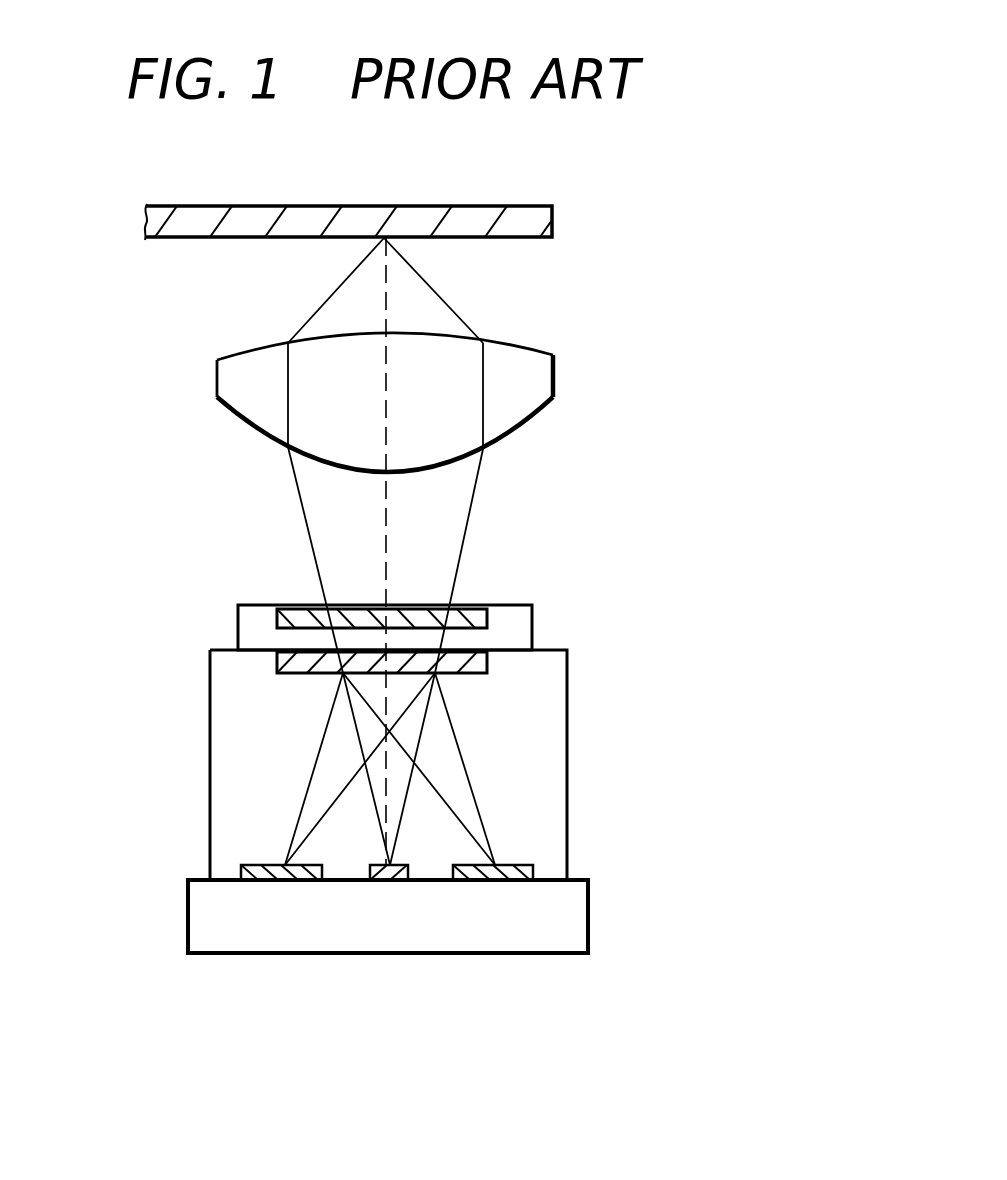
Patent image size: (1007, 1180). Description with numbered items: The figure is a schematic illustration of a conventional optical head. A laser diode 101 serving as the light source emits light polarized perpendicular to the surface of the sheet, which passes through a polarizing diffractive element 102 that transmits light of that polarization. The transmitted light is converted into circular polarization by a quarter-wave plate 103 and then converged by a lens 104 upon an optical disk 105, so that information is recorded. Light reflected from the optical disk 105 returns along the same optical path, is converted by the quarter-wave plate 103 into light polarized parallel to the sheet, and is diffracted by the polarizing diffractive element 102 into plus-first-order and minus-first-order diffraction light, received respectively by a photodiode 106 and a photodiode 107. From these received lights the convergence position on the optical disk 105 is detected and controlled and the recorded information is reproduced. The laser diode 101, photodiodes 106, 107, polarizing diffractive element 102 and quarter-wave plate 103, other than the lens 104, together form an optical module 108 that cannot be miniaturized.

The laser diode 101 is at (383, 881).
The polarizing diffractive element 102 is at (487, 667).
The quarter-wave plate 103 is at (465, 612).
The lens 104 is at (555, 375).
The optical disk 105 is at (520, 205).
The photodiode 106 is at (527, 878).
The photodiode 107 is at (256, 874).
The optical module 108 is at (567, 853).